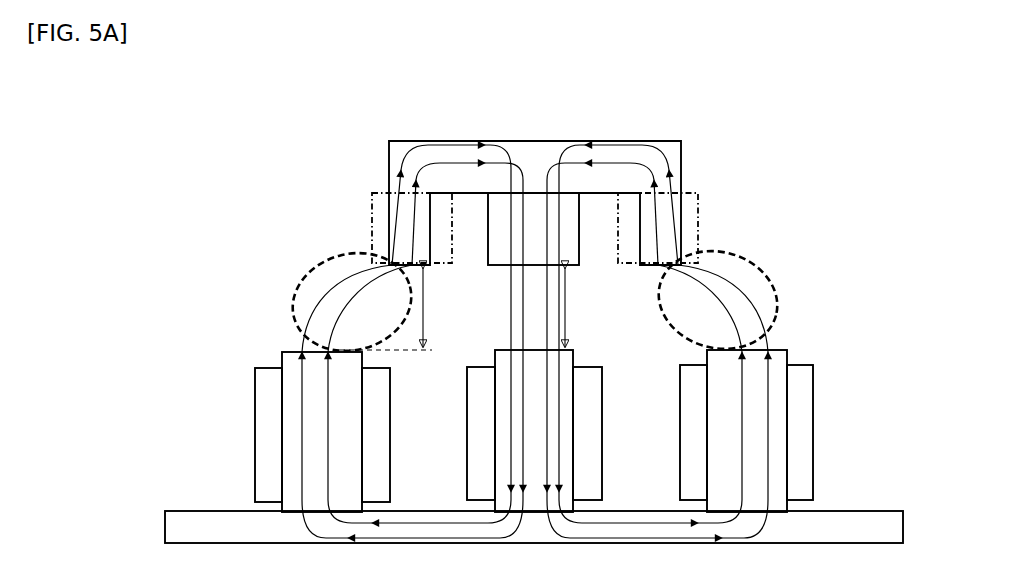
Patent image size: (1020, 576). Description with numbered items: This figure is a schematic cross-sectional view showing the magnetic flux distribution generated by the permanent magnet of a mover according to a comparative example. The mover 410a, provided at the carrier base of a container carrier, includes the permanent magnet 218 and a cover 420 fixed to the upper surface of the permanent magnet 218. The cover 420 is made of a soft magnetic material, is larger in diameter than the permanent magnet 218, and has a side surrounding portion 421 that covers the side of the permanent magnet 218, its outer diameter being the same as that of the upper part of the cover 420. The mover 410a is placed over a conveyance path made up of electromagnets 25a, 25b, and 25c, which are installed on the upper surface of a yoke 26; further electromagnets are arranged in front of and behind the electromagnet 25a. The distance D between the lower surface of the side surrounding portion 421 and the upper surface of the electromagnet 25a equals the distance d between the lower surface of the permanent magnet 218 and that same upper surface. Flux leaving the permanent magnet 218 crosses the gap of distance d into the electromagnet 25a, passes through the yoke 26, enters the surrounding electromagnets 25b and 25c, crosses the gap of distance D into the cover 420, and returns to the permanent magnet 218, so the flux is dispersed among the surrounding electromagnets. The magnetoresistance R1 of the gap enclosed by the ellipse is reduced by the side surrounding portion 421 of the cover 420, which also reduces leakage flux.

The mover 410a is at (405, 120).
The cover 420 is at (388, 158).
The side surrounding portion 421 is at (372, 220).
The permanent magnet 218 is at (578, 266).
The electromagnet 25a is at (500, 345).
The electromagnet 25b is at (250, 400).
The electromagnet 25c is at (795, 343).
The yoke 26 is at (205, 510).
The magnetoresistance R1 is at (533, 301).
The distance D is at (393, 309).
The distance d is at (573, 307).